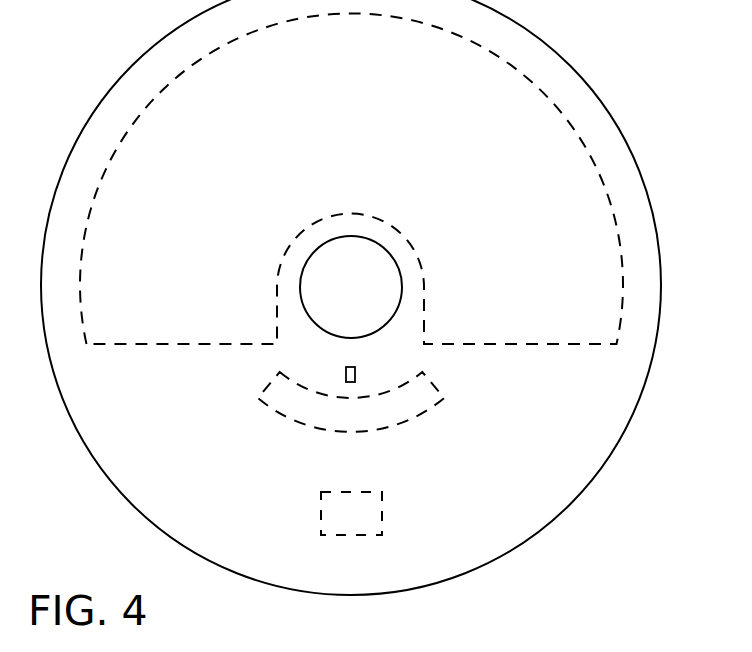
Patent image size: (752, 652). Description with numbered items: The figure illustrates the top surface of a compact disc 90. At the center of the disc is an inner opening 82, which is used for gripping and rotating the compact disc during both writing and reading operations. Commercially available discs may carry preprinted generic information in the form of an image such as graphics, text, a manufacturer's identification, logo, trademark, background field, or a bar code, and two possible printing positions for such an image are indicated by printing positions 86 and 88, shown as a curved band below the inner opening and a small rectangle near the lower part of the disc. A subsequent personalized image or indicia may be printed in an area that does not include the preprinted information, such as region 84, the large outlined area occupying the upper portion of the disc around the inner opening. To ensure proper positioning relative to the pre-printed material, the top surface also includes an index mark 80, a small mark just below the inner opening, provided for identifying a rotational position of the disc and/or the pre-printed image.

The index mark 80 is at (355, 368).
The inner opening 82 is at (404, 285).
The region 84 is at (545, 94).
The printing position 86 is at (434, 409).
The printing position 88 is at (383, 512).
The compact disc 90 is at (137, 81).